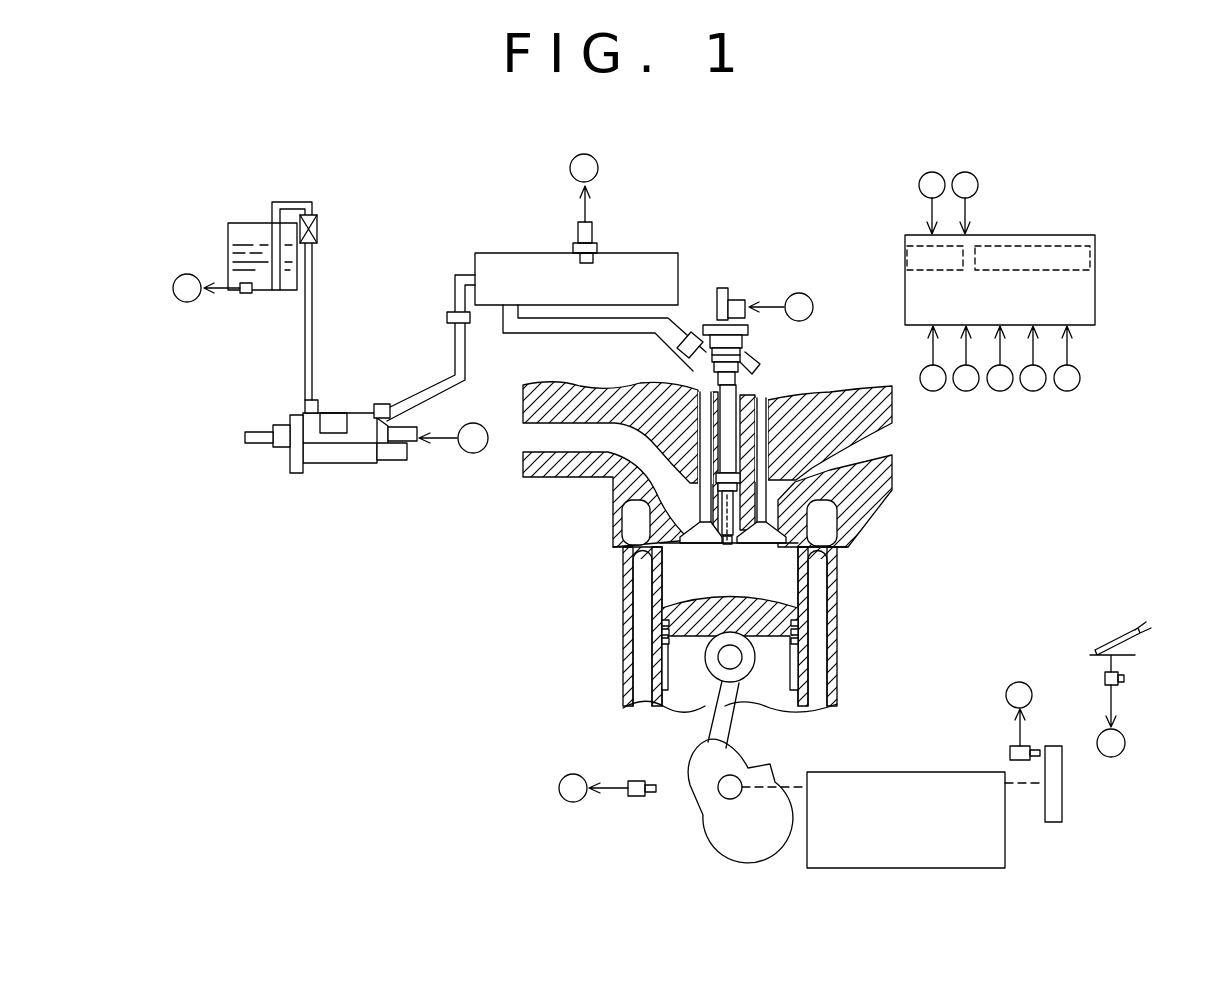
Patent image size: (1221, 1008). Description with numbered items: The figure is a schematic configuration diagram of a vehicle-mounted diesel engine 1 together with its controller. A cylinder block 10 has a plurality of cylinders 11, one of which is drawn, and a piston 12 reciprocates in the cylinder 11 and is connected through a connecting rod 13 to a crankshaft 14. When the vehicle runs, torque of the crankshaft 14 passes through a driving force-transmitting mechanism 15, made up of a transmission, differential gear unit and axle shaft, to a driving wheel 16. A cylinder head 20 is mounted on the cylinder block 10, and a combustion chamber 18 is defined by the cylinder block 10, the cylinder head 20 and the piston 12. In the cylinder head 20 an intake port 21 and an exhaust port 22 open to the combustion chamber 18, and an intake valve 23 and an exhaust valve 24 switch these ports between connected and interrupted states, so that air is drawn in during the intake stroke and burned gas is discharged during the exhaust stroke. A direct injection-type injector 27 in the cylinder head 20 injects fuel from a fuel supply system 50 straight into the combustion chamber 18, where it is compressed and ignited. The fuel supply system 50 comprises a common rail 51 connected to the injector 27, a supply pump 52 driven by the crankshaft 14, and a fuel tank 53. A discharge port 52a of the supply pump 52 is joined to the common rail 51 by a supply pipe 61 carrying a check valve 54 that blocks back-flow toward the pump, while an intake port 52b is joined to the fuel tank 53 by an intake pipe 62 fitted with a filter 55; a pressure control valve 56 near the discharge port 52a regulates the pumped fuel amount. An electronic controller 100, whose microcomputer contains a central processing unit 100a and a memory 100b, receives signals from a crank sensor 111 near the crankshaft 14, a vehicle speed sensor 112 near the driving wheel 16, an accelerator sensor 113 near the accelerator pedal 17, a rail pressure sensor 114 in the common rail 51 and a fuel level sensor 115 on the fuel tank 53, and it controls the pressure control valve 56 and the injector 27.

The diesel engine 1 is at (562, 700).
The cylinder block 10 is at (838, 608).
The cylinder 11 is at (658, 716).
The piston 12 is at (662, 612).
The connecting rod 13 is at (702, 738).
The crankshaft 14 is at (716, 788).
The driving force-transmitting mechanism 15 is at (818, 771).
The driving wheel 16 is at (1063, 800).
The accelerator pedal 17 is at (1100, 640).
The combustion chamber 18 is at (796, 594).
The cylinder head 20 is at (613, 535).
The intake port 21 is at (626, 496).
The exhaust port 22 is at (848, 490).
The intake valve 23 is at (690, 546).
The exhaust valve 24 is at (760, 546).
The injector 27 is at (752, 372).
The fuel supply system 50 is at (463, 497).
The common rail 51 is at (510, 253).
The supply pump 52 is at (337, 465).
The discharge port 52a is at (382, 408).
The intake port 52b is at (304, 406).
The fuel tank 53 is at (232, 292).
The check valve 54 is at (446, 318).
The filter 55 is at (318, 231).
The pressure control valve 56 is at (420, 423).
The supply pipe 61 is at (426, 392).
The intake pipe 62 is at (305, 348).
The electronic controller 100 is at (1097, 300).
The central processing unit 100a is at (904, 262).
The memory 100b is at (1096, 262).
The crank sensor 111 is at (628, 800).
The vehicle speed sensor 112 is at (1009, 752).
The accelerator sensor 113 is at (1125, 678).
The rail pressure sensor 114 is at (598, 243).
The fuel level sensor 115 is at (252, 296).